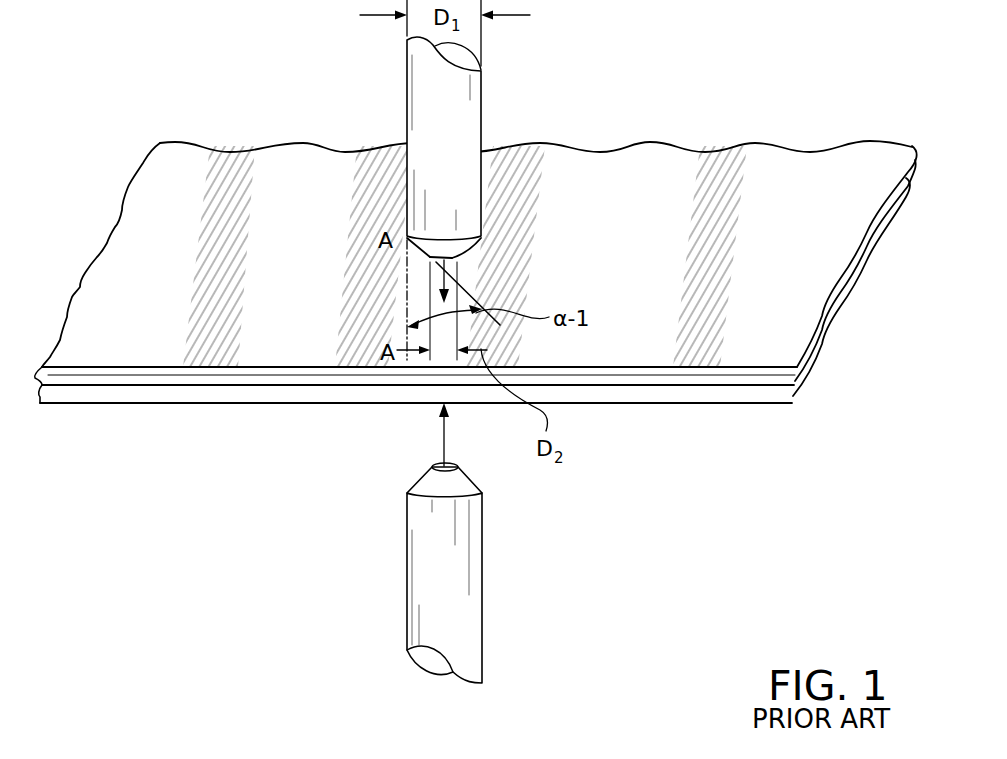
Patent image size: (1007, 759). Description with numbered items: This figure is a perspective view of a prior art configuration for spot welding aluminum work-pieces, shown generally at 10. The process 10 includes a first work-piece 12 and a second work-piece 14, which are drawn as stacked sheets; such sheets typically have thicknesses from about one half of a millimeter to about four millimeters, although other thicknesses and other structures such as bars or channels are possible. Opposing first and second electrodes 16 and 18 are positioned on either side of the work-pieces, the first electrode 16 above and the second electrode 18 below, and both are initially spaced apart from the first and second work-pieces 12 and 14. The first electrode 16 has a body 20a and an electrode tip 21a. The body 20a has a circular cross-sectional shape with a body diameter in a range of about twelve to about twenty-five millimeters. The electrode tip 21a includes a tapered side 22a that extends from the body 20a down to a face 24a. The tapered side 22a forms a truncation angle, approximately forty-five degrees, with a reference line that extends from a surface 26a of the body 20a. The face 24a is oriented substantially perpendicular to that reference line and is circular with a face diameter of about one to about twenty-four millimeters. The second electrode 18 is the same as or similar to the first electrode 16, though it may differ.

The prior art spot welding configuration 10 is at (97, 75).
The first work-piece 12 is at (87, 302).
The second work-piece 14 is at (147, 403).
The first electrode 16 is at (449, 160).
The second electrode 18 is at (482, 582).
The body 20a is at (407, 89).
The electrode tip 21a is at (449, 256).
The tapered side 22a is at (467, 249).
The face 24a is at (454, 258).
The surface 26a is at (411, 127).